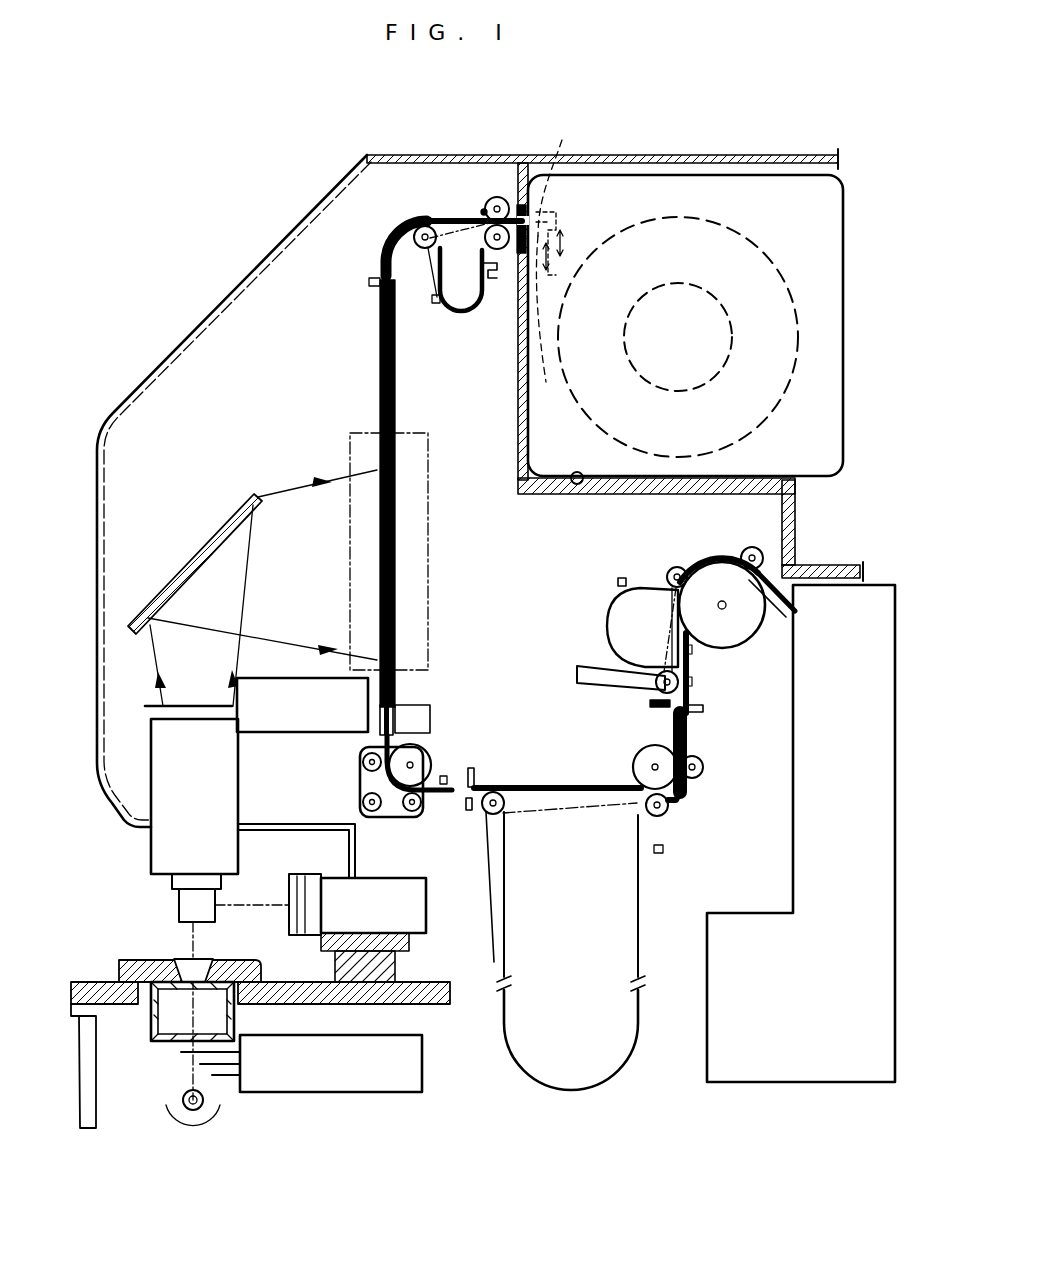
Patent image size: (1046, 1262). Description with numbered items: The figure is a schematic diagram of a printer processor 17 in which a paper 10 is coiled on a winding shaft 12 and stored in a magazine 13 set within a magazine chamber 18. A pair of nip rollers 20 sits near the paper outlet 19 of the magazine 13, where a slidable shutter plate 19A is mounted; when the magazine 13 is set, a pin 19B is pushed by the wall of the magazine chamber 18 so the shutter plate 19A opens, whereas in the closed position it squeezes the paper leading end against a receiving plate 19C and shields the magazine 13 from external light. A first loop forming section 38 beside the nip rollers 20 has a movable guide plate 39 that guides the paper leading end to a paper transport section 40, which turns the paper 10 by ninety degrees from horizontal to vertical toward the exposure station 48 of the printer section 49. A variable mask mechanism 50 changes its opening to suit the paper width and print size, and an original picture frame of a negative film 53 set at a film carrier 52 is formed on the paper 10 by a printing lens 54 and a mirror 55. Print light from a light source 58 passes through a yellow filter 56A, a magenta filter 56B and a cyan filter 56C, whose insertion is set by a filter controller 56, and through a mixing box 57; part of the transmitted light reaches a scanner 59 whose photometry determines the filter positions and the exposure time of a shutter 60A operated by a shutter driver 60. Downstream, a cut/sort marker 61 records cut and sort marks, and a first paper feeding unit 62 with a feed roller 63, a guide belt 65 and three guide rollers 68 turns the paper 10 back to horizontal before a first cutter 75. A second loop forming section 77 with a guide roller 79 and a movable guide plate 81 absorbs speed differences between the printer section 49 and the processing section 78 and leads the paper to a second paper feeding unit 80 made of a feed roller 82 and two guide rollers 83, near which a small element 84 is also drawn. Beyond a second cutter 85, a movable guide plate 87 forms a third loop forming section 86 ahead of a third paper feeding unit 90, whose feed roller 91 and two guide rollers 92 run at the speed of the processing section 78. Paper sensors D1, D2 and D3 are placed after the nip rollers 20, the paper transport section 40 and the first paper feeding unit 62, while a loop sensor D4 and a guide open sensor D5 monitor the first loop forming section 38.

The paper 10 is at (384, 560).
The winding shaft 12 is at (678, 284).
The magazine 13 is at (648, 176).
The printer processor 17 is at (130, 372).
The magazine chamber 18 is at (577, 485).
The paper outlet 19 is at (522, 200).
The shutter plate 19A is at (556, 217).
The pin 19B is at (551, 322).
The receiving plate 19C is at (564, 177).
The nip rollers 20 is at (486, 190).
The first loop forming section 38 is at (440, 206).
The movable guide plate 39 is at (437, 272).
The paper transport section 40 is at (370, 241).
The exposure station 48 is at (362, 590).
The printer section 49 is at (210, 486).
The variable mask mechanism 50 is at (352, 477).
The film carrier 52 is at (140, 960).
The negative film 53 is at (210, 962).
The printing lens 54 is at (160, 855).
The mirror 55 is at (192, 548).
The filter controller 56 is at (320, 1093).
The yellow filter 56A is at (181, 1052).
The magenta filter 56B is at (200, 1064).
The cyan filter 56C is at (224, 1078).
The mixing box 57 is at (234, 1022).
The light source 58 is at (186, 1110).
The scanner 59 is at (389, 878).
The shutter driver 60 is at (270, 678).
The shutter 60A is at (196, 705).
The cut/sort marker 61 is at (426, 706).
The first paper feeding unit 62 is at (346, 751).
The feed roller 63 is at (420, 758).
The guide belt 65 is at (360, 783).
The guide rollers 68 is at (362, 761).
The first cutter 75 is at (484, 764).
The second loop forming section 77 is at (572, 755).
The processing section 78 is at (776, 805).
The guide roller 79 is at (512, 790).
The second paper feeding unit 80 is at (698, 806).
The movable guide plate 81 is at (490, 893).
The feed roller 82 is at (640, 758).
The guide rollers 83 is at (705, 766).
The film sensor 84 is at (658, 855).
The second cutter 85 is at (704, 708).
The third loop forming section 86 is at (597, 617).
The movable guide plate 87 is at (608, 684).
The third paper feeding unit 90 is at (706, 550).
The feed roller 91 is at (735, 636).
The guide rollers 92 is at (669, 567).
The first paper sensor D1 is at (482, 210).
The second paper sensor D2 is at (369, 285).
The third paper sensor D3 is at (444, 775).
The loop sensor D4 is at (488, 279).
The guide open sensor D5 is at (434, 304).